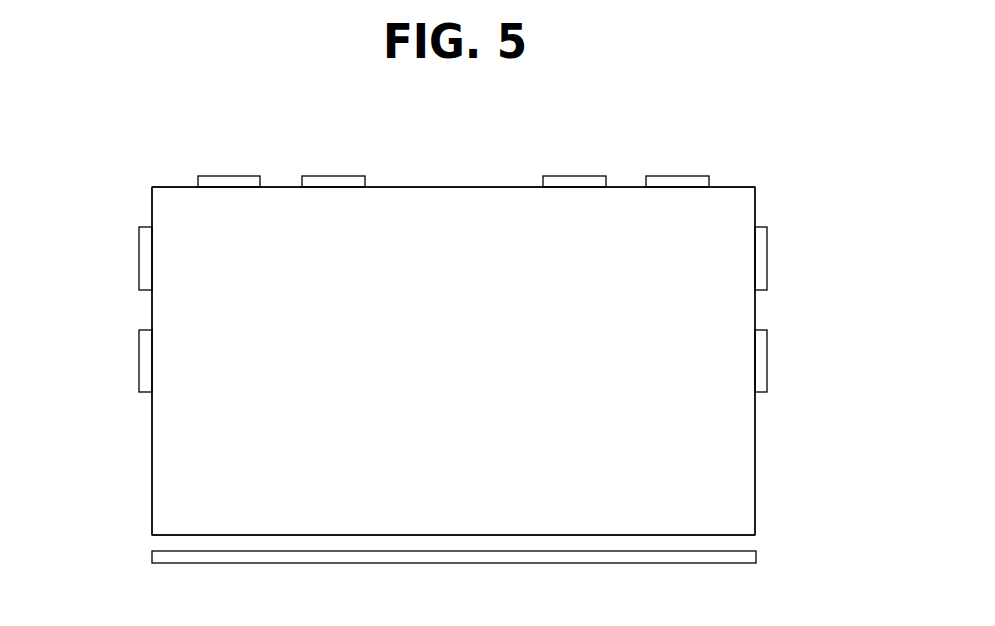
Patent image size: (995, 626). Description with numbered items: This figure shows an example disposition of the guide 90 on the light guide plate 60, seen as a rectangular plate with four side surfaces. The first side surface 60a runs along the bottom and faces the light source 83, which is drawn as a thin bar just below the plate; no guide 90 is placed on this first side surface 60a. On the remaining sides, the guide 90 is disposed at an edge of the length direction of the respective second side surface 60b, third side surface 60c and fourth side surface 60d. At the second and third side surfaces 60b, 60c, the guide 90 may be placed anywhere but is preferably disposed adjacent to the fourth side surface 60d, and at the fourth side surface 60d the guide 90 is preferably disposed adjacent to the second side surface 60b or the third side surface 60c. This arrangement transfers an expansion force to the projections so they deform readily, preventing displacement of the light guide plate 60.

The light guide plate 60 is at (211, 513).
The first side surface 60a is at (718, 536).
The second side surface 60b is at (152, 205).
The third side surface 60c is at (755, 210).
The fourth side surface 60d is at (415, 186).
The light source 83 is at (530, 558).
The guide 90 is at (225, 175).